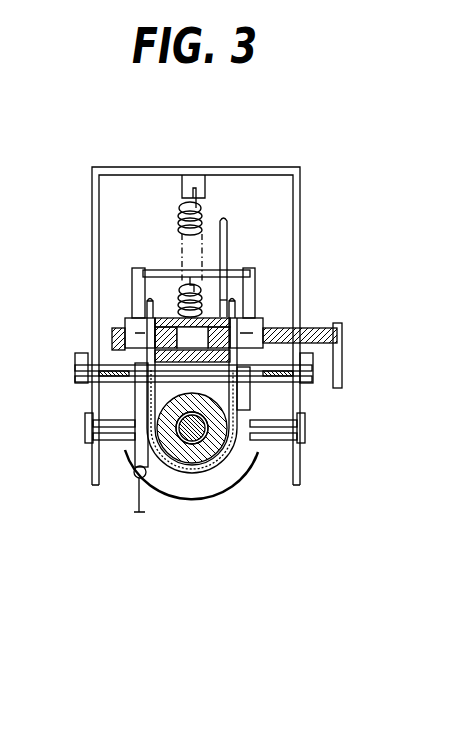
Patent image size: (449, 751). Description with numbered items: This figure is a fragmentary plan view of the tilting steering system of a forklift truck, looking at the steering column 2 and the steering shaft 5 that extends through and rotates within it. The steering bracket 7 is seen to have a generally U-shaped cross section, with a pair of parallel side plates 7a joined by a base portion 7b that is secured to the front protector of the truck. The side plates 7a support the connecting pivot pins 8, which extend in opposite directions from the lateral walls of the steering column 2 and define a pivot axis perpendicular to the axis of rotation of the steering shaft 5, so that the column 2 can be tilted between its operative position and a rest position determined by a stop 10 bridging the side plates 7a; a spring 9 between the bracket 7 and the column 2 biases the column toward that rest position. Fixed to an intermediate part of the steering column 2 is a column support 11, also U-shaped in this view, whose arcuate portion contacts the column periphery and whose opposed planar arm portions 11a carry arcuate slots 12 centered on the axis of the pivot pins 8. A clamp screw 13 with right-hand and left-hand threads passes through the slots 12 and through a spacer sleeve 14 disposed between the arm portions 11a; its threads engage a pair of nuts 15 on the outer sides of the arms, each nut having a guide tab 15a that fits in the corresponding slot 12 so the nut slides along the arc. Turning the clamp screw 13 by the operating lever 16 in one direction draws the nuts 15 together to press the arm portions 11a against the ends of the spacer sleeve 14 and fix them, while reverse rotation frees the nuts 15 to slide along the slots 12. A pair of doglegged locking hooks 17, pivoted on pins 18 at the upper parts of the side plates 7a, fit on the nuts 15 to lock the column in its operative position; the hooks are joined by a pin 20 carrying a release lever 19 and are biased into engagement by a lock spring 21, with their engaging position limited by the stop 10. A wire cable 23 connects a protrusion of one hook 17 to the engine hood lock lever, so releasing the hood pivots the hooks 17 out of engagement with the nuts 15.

The steering column 2 is at (195, 462).
The steering shaft 5 is at (207, 445).
The steering bracket 7 is at (196, 160).
The side plates 7a is at (92, 243).
The base portion 7b is at (246, 175).
The connecting pivot pins 8 is at (86, 430).
The spring 9 is at (212, 300).
The stop 10 is at (150, 297).
The column support 11 is at (238, 467).
The arm portions 11a is at (147, 305).
The arcuate slots 12 is at (97, 365).
The clamp screw 13 is at (322, 327).
The spacer sleeve 14 is at (227, 300).
The nuts 15 is at (125, 321).
The guide tab 15a is at (118, 344).
The operating lever 16 is at (341, 386).
The locking hooks 17 is at (135, 465).
The pins 18 is at (88, 386).
The release lever 19 is at (226, 219).
The pin 20 is at (158, 270).
The lock spring 21 is at (188, 282).
The wire cable 23 is at (137, 512).